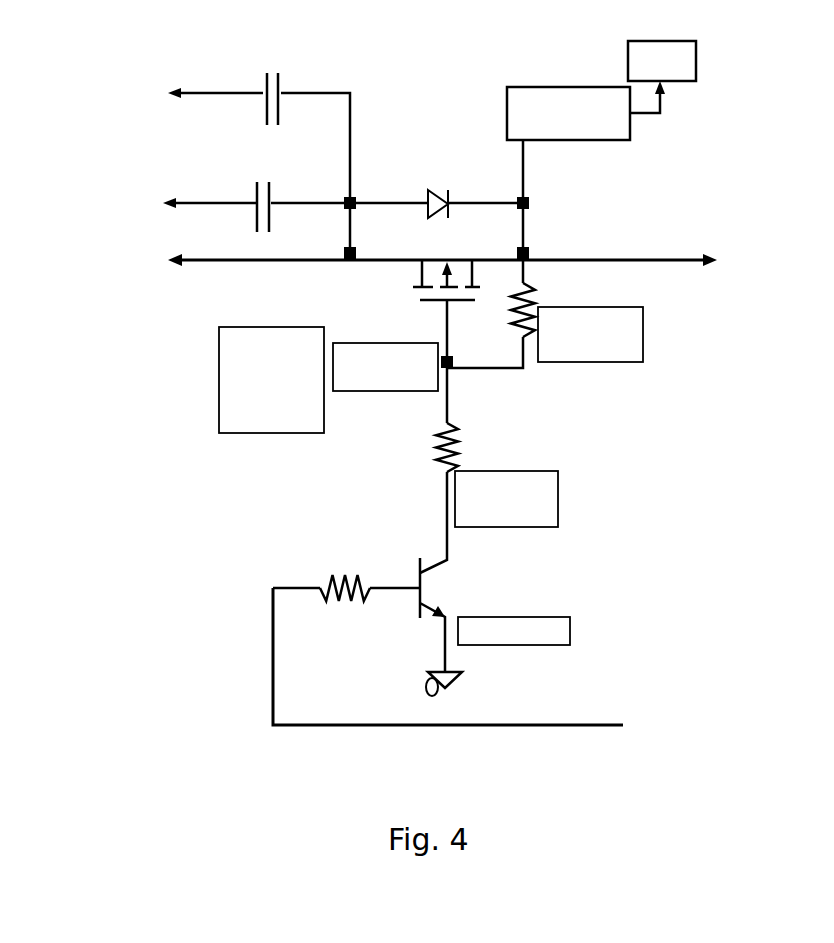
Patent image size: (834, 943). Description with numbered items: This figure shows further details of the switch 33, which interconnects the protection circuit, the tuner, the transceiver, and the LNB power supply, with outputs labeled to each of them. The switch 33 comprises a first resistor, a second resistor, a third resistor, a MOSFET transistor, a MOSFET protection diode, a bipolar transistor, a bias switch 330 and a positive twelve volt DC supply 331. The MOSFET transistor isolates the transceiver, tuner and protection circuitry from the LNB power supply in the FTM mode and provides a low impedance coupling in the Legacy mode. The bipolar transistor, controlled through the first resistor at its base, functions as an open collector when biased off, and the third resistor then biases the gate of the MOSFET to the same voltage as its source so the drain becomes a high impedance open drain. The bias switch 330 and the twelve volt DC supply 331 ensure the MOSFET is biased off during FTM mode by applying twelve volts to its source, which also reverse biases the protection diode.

The switch 33 is at (437, 369).
The bias switch 330 is at (622, 123).
The positive 12 volt DC supply 331 is at (700, 61).